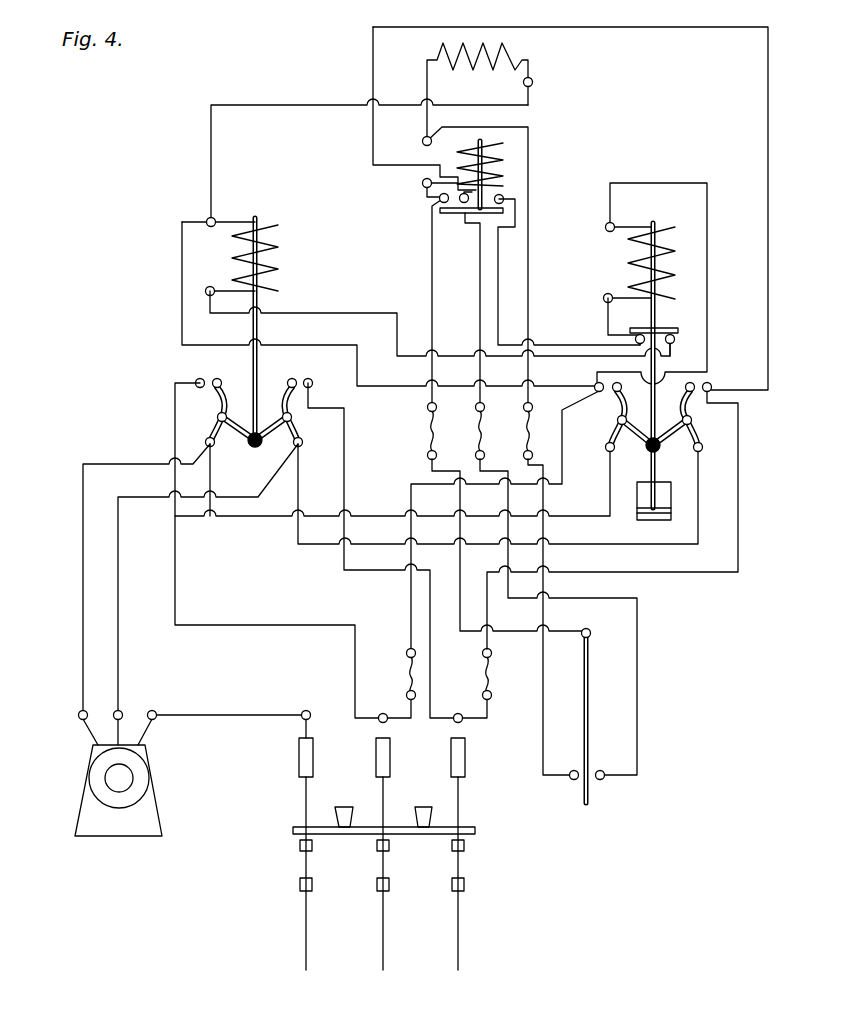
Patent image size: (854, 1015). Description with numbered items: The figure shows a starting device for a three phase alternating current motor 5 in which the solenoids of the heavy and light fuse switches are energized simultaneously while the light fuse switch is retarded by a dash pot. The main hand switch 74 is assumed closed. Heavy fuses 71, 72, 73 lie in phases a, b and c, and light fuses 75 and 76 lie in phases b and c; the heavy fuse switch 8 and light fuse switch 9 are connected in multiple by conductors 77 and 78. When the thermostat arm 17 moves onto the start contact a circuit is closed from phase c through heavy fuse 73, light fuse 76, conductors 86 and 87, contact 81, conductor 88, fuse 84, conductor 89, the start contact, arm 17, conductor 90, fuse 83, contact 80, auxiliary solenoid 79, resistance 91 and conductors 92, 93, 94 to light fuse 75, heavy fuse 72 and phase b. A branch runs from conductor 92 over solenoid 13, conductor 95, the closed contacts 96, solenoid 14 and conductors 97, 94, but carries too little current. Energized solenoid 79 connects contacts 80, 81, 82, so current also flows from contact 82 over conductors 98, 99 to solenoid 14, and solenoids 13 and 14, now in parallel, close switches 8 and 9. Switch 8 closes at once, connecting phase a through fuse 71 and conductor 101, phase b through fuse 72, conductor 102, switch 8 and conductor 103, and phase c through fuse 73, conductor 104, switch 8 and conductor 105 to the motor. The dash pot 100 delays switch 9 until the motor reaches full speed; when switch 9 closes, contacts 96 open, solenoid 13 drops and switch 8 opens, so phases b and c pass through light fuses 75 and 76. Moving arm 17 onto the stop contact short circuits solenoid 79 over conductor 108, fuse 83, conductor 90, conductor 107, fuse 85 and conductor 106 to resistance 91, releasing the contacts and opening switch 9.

The motor 5 is at (145, 781).
The heavy fuse switch 8 is at (270, 425).
The light fuse switch 9 is at (672, 427).
The solenoid 13 is at (245, 329).
The solenoid 14 is at (628, 284).
The thermostat arm 17 is at (589, 730).
The heavy fuse 71 is at (299, 765).
The heavy fuse 72 is at (376, 765).
The heavy fuse 73 is at (451, 765).
The main hand switch 74 is at (362, 842).
The light fuse 75 is at (405, 677).
The light fuse 76 is at (482, 677).
The conductor 77 is at (590, 518).
The conductor 78 is at (621, 557).
The auxiliary solenoid 79 is at (495, 172).
The contact 80 is at (440, 202).
The contact 81 is at (462, 204).
The contact 82 is at (503, 200).
The fuse 83 is at (430, 436).
The fuse 84 is at (476, 440).
The fuse 85 is at (526, 440).
The conductor 86 is at (728, 574).
The conductor 87 is at (768, 232).
The conductor 88 is at (480, 292).
The conductor 89 is at (642, 680).
The conductor 90 is at (419, 634).
The resistance 91 is at (505, 86).
The conductor 92 is at (318, 108).
The conductor 93 is at (326, 354).
The conductor 94 is at (563, 466).
The conductor 95 is at (361, 314).
The contacts 96 is at (653, 337).
The conductor 97 is at (708, 290).
The conductor 98 is at (552, 329).
The conductor 99 is at (608, 333).
The dash pot 100 is at (668, 500).
The conductor 101 is at (227, 716).
The conductor 102 is at (268, 626).
The conductor 103 is at (72, 600).
The conductor 104 is at (344, 482).
The conductor 105 is at (120, 591).
The conductor 106 is at (529, 240).
The conductor 107 is at (542, 719).
The conductor 108 is at (430, 302).
The phase a is at (304, 932).
The phase b is at (381, 934).
The phase c is at (456, 930).